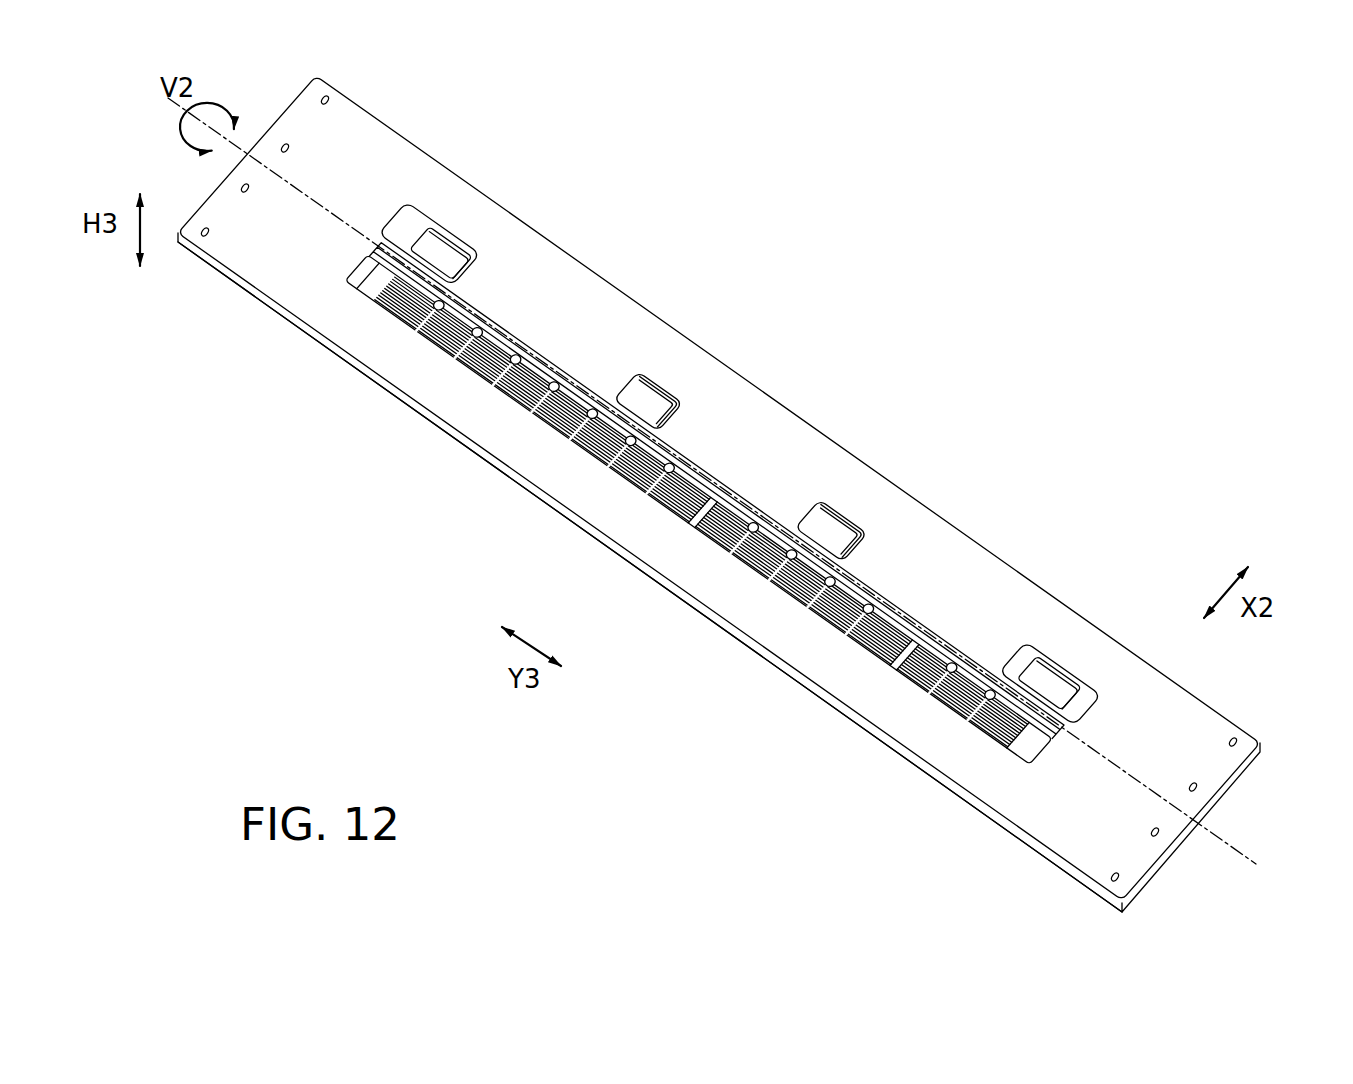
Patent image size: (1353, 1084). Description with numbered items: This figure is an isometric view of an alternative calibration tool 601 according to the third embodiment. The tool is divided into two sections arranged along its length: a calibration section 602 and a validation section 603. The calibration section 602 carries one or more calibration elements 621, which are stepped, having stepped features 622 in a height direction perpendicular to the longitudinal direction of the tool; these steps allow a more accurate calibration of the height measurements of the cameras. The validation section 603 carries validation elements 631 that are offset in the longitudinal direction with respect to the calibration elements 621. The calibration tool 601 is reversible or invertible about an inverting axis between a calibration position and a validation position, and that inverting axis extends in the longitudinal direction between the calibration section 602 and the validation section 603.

The calibration tool 601 is at (1056, 324).
The calibration section 602 is at (1217, 848).
The validation section 603 is at (1283, 765).
The calibration element 621 is at (368, 292).
The stepped feature 622 is at (577, 445).
The validation element 631 is at (441, 258).